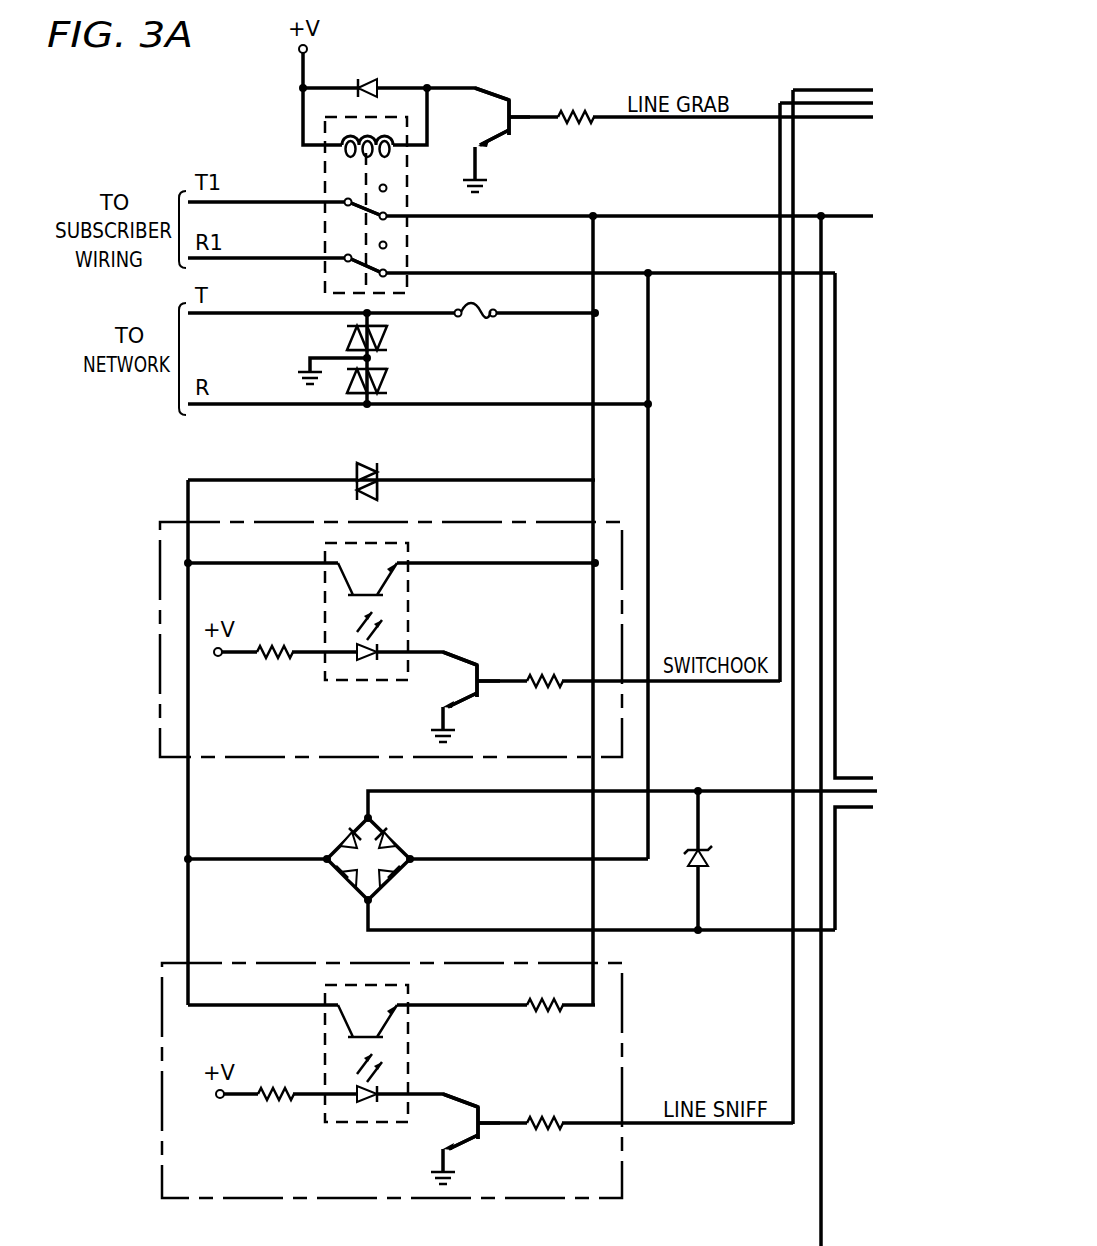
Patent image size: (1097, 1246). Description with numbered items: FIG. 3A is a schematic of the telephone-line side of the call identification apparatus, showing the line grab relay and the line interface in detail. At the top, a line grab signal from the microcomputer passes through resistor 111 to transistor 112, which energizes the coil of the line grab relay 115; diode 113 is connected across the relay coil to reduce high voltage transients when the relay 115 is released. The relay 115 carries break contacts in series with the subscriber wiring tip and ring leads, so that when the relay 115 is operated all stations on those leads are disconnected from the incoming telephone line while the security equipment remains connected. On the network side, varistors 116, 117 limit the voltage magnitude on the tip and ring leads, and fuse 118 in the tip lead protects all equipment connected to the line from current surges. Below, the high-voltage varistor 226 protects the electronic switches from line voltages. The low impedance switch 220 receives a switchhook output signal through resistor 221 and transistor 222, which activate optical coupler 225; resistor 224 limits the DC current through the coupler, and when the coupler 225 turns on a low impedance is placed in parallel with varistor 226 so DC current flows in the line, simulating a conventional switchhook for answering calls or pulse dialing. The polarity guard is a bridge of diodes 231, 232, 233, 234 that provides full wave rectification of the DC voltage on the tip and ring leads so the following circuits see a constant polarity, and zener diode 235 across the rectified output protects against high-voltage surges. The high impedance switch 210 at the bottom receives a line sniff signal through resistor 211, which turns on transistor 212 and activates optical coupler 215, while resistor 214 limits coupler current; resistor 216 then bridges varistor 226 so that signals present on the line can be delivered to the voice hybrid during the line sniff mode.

The resistor 111 is at (577, 102).
The transistor 112 is at (502, 104).
The diode 113 is at (372, 74).
The line grab relay 115 is at (325, 173).
The varistor 116 is at (389, 337).
The varistor 117 is at (389, 382).
The fuse 118 is at (476, 299).
The high impedance switch 210 is at (161, 1082).
The resistor 211 is at (545, 1111).
The transistor 212 is at (471, 1109).
The resistor 214 is at (276, 1080).
The optical coupler 215 is at (367, 1123).
The resistor 216 is at (545, 992).
The low impedance switch 220 is at (159, 636).
The resistor 221 is at (544, 667).
The transistor 222 is at (471, 667).
The resistor 224 is at (275, 637).
The optical coupler 225 is at (367, 681).
The varistor 226 is at (367, 467).
The diode 231 is at (330, 830).
The diode 232 is at (328, 889).
The diode 233 is at (408, 830).
The diode 234 is at (410, 889).
The zener diode 235 is at (719, 860).